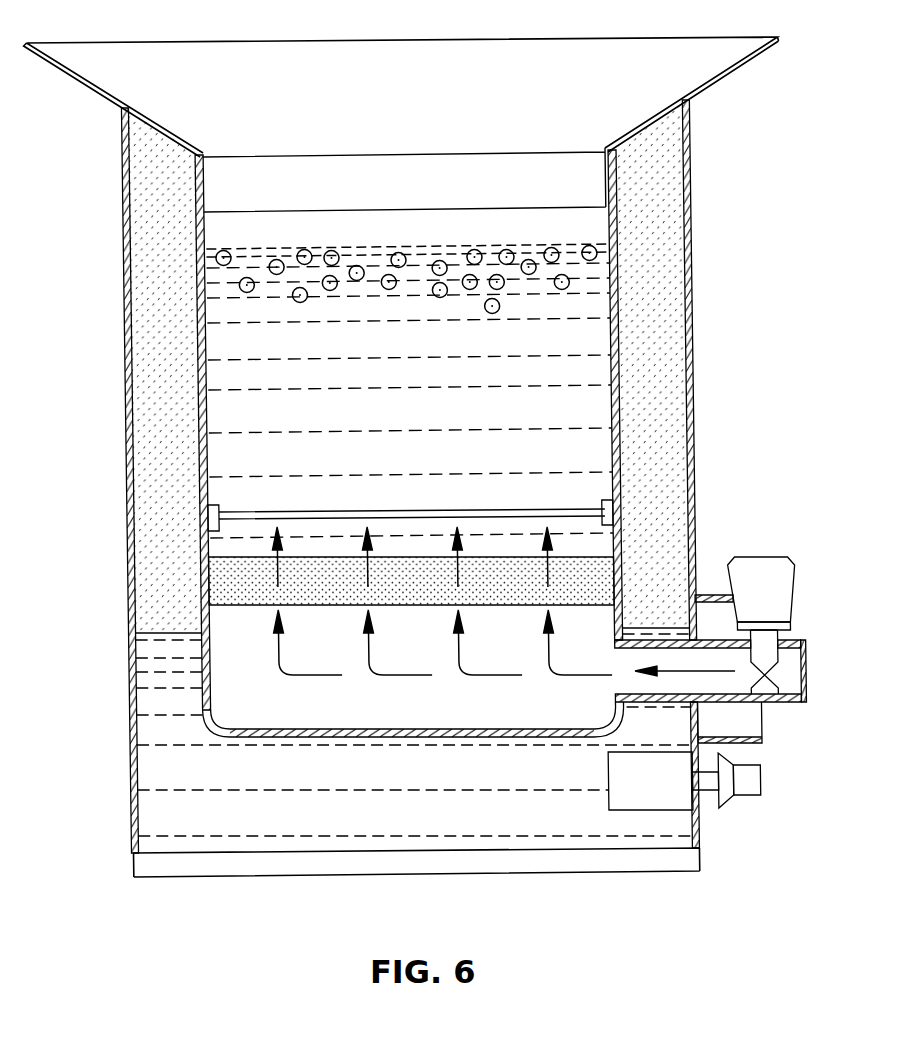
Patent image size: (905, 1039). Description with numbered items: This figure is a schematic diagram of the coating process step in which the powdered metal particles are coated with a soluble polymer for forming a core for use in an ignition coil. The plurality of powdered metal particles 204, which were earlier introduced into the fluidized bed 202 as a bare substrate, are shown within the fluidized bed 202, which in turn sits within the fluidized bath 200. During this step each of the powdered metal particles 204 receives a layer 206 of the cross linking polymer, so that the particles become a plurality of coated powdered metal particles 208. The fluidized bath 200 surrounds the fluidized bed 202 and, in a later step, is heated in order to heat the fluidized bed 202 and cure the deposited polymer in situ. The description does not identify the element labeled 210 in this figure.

The fluidized bath 200 is at (141, 768).
The fluidized bed 202 is at (590, 412).
The powdered metal particles 204 is at (328, 250).
The layer of the cross linking polymer 206 is at (393, 250).
The coated powdered metal particles 208 is at (509, 232).
The surface layer 210 is at (265, 250).